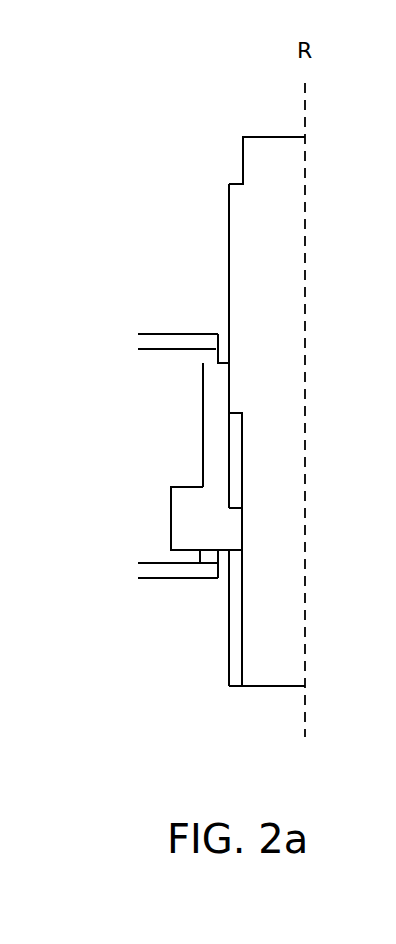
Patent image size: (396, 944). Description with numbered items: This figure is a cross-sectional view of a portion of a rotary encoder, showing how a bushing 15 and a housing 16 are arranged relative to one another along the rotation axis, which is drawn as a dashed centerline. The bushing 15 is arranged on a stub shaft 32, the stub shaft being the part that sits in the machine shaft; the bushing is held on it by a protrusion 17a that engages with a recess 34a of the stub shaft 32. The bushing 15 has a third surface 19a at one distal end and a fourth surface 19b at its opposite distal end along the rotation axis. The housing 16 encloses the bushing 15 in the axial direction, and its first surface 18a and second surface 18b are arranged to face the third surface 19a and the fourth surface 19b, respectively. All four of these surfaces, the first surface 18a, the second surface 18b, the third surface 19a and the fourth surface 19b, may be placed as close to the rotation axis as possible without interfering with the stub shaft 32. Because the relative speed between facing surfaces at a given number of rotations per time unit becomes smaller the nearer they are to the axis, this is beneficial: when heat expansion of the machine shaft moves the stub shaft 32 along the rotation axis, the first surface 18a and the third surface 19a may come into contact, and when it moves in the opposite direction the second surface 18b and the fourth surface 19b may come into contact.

The bushing 15 is at (212, 455).
The housing 16 is at (144, 329).
The protrusion 17a is at (240, 532).
The first surface 18a is at (197, 362).
The second surface 18b is at (187, 553).
The third surface 19a is at (211, 355).
The fourth surface 19b is at (210, 557).
The stub shaft 32 is at (236, 153).
The recess 34a is at (244, 649).